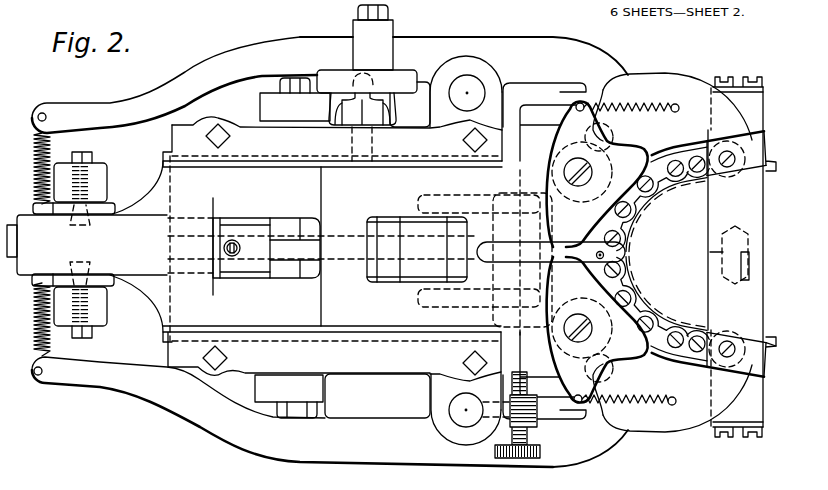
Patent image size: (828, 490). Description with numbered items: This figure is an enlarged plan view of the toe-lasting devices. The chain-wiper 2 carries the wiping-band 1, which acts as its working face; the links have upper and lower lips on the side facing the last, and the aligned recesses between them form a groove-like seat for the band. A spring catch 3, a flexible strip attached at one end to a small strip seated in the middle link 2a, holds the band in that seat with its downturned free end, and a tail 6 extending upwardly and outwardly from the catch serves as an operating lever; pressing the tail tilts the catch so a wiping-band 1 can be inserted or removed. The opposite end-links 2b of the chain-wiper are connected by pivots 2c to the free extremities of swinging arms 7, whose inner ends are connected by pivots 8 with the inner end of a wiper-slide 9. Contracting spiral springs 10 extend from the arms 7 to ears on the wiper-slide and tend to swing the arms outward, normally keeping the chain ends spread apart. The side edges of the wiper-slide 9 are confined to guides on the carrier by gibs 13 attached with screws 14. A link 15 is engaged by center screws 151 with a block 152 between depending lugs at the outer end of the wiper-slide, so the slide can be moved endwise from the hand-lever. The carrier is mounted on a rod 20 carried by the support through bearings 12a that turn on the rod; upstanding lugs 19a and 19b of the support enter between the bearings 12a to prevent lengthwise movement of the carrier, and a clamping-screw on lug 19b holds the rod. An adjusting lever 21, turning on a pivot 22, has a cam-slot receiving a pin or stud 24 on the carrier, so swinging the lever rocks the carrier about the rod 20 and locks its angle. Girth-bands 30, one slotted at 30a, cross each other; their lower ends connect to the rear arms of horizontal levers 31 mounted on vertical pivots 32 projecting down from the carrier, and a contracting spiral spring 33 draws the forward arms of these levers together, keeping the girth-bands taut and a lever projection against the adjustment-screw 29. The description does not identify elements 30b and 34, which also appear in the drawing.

The wiping-band 1 is at (767, 341).
The chain-wiper 2 is at (640, 304).
The middle block or link of the chain-wiper 2a is at (626, 256).
The end-links of the chain-wiper 2b is at (775, 161).
The pivots 2c is at (727, 340).
The spring catch 3 is at (640, 244).
The tail 6 is at (507, 249).
The swinging arms 7 is at (657, 75).
The pivots 8 is at (578, 158).
The wiper-slide 9 is at (151, 188).
The contracting spiral springs 10 is at (617, 105).
The bearings 12a is at (218, 266).
The gibs 13 is at (172, 141).
The screws 14 is at (218, 131).
The link 15 is at (133, 322).
The upstanding lug of the support 19a is at (407, 228).
The upstanding lug of the support 19b is at (252, 226).
The rod 20 is at (285, 240).
The adjusting lever 21 is at (398, 73).
The pivot 22 is at (378, 8).
The pin or stud 24 is at (358, 80).
The adjustment-screw 29 is at (503, 462).
The girth-bands 30 is at (750, 194).
The slot 30a is at (740, 258).
The slot 30b is at (726, 256).
The horizontal levers 31 is at (513, 37).
The vertical pivots 32 is at (470, 82).
The contracting spiral spring 33 is at (37, 160).
The clamp block 34 is at (262, 96).
The center screws 151 is at (88, 150).
The block 152 is at (97, 209).